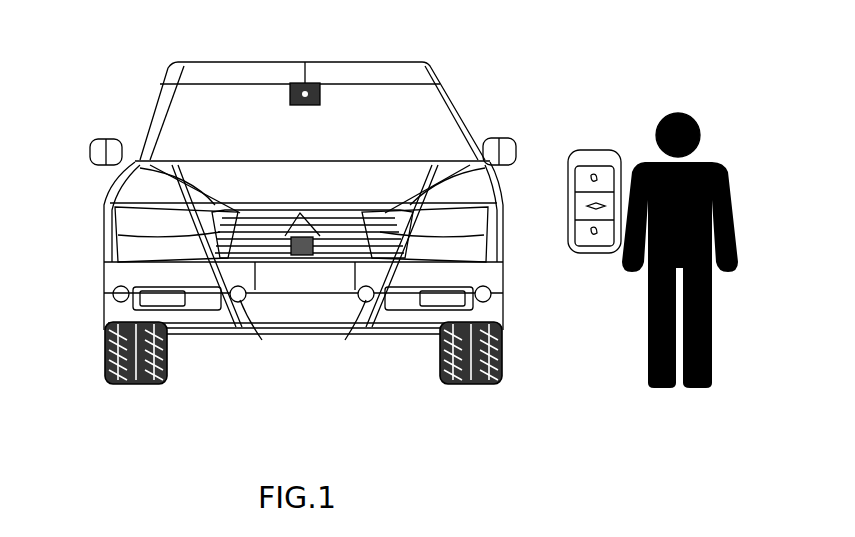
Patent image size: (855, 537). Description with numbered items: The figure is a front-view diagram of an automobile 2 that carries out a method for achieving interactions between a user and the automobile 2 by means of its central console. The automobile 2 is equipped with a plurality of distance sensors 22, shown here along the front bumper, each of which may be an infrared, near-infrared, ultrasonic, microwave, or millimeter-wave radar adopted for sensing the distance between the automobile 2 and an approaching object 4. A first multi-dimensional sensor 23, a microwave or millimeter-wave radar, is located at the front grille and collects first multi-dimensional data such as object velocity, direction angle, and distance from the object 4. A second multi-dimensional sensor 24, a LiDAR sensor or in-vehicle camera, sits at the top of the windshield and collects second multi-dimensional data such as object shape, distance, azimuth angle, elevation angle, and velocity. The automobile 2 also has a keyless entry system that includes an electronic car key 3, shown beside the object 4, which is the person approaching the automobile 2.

The automobile 2 is at (433, 62).
The electronic car key 3 is at (587, 150).
The object 4 is at (690, 114).
The distance sensor 22 is at (112, 293).
The first multi-dimensional sensor 23 is at (308, 234).
The second multi-dimensional sensor 24 is at (292, 94).